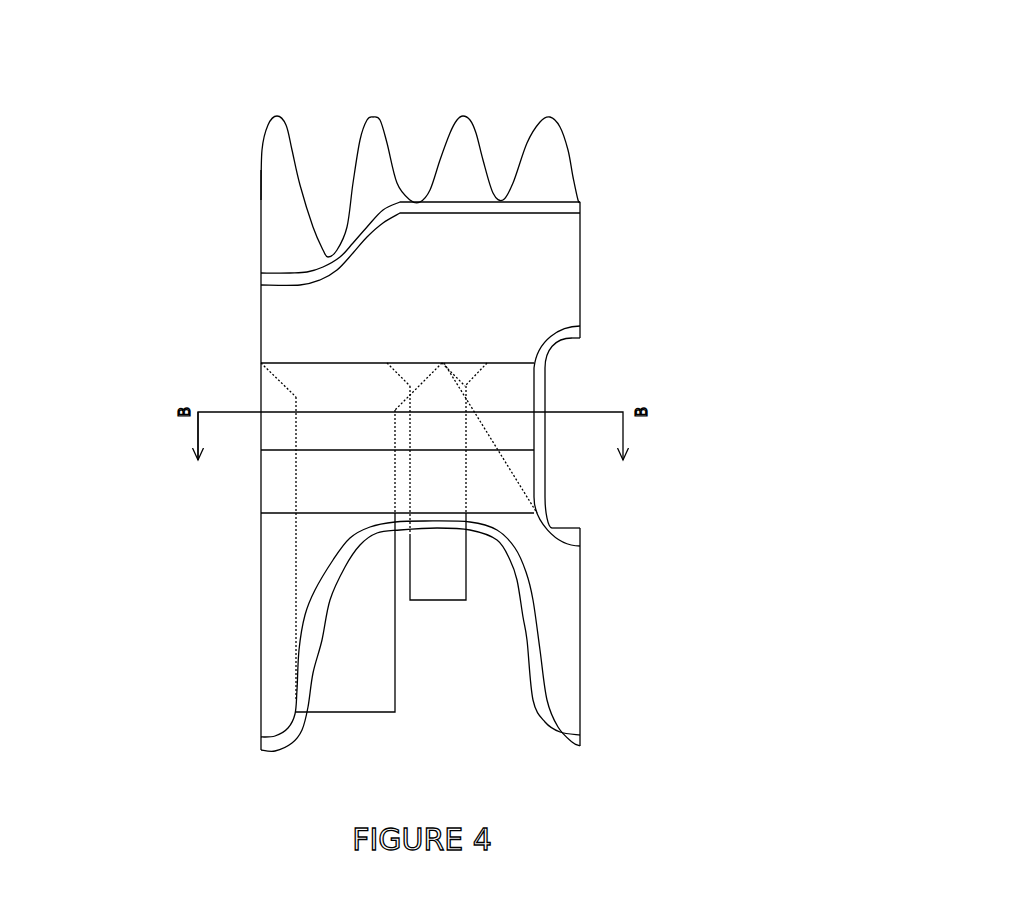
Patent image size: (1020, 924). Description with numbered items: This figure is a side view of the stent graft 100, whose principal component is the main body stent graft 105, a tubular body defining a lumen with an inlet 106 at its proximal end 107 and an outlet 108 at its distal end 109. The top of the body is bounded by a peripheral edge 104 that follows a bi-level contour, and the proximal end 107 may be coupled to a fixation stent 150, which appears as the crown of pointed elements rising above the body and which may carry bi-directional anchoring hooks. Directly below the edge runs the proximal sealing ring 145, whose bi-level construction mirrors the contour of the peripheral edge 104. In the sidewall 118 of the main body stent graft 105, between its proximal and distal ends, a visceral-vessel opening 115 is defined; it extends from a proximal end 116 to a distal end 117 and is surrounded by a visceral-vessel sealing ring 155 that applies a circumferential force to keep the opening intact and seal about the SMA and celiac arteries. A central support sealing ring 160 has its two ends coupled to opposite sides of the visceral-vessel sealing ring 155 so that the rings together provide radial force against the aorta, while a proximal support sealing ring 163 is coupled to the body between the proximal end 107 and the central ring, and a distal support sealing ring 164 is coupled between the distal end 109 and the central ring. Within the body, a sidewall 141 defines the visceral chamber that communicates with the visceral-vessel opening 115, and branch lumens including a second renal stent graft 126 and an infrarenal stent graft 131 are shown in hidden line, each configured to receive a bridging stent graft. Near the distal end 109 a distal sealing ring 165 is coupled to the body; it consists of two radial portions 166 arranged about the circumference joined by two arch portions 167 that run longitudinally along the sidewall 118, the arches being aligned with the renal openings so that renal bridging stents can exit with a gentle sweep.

The stent graft 100 is at (432, 419).
The peripheral edge 104 is at (527, 208).
The inlet 106 is at (580, 202).
The main body stent graft 105 is at (583, 277).
The proximal end 107 is at (245, 262).
The outlet 108 is at (533, 700).
The distal end 109 is at (242, 738).
The visceral-vessel opening 115 is at (547, 397).
The proximal end of the visceral-vessel opening 116 is at (590, 333).
The distal end of the visceral-vessel opening 117 is at (674, 614).
The sidewall 118 is at (581, 605).
The second renal stent graft 126 is at (407, 568).
The infrarenal stent graft 131 is at (293, 552).
The sidewall 141 is at (505, 478).
The proximal sealing ring 145 is at (580, 213).
The fixation stent 150 is at (262, 170).
The visceral-vessel sealing ring 155 is at (551, 529).
The central support sealing ring 160 is at (277, 450).
The proximal support sealing ring 163 is at (305, 363).
The distal support sealing ring 164 is at (273, 513).
The distal sealing ring 165 is at (541, 661).
The radial portions 166 is at (486, 633).
The arch portions 167 is at (582, 738).